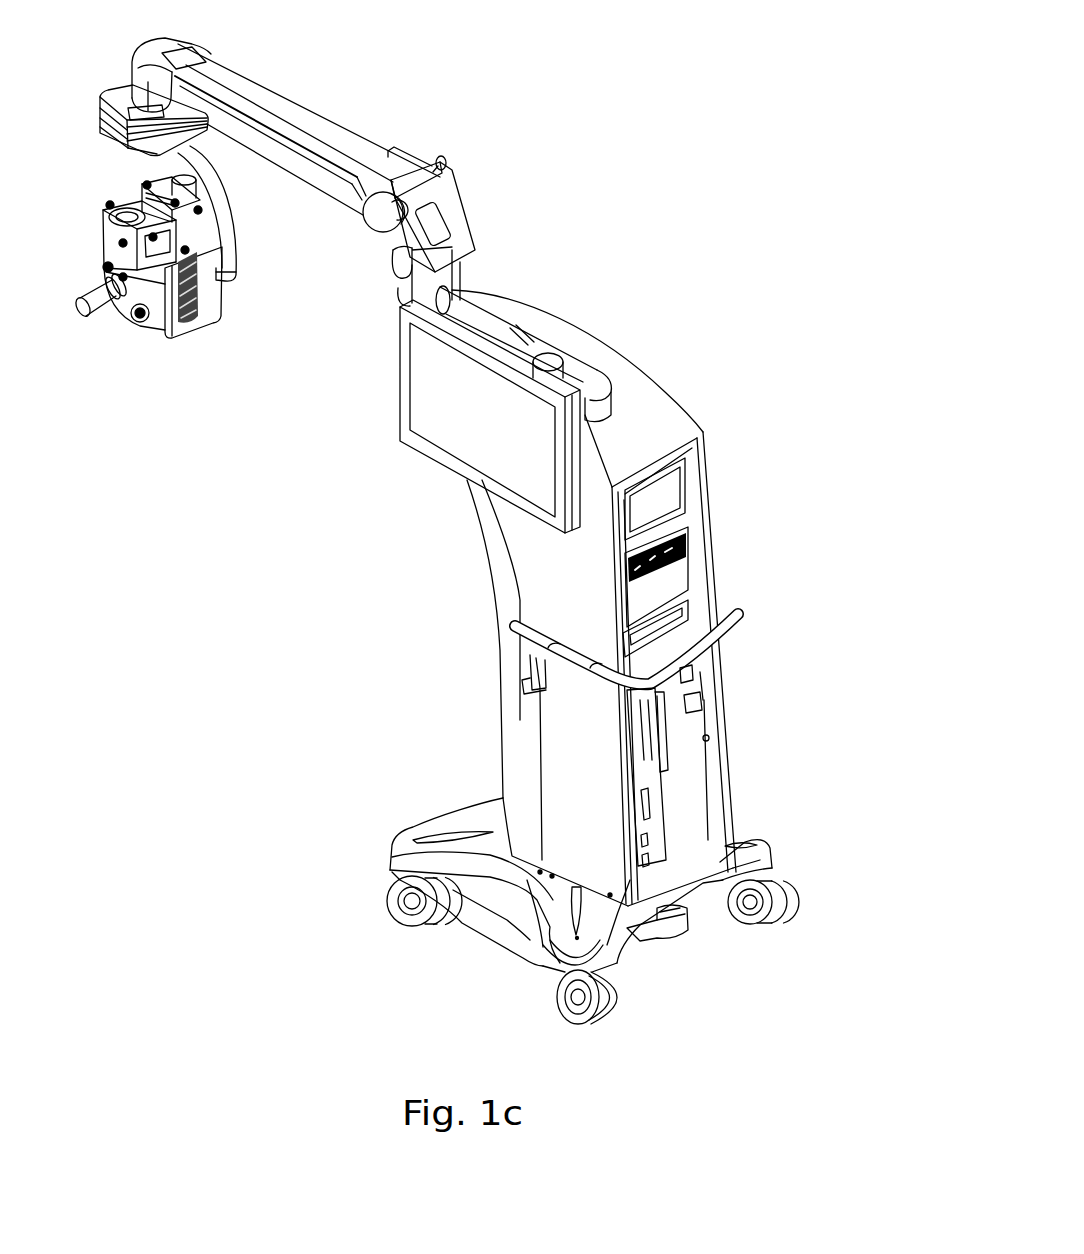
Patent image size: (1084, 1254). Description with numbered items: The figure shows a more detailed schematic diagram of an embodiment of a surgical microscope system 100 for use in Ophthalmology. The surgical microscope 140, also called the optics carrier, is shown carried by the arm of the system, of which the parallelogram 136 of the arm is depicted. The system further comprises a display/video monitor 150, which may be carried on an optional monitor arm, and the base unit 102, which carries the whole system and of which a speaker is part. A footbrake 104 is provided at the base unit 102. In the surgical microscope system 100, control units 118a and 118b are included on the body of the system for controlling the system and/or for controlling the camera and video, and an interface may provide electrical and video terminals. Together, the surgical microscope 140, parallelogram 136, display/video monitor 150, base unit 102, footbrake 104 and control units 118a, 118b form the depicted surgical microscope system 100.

The surgical microscope system 100 is at (852, 1018).
The base unit 102 is at (413, 840).
The footbrake 104 is at (658, 938).
The control unit 118a is at (677, 492).
The control unit 118b is at (682, 575).
The parallelogram of the arm 136 is at (293, 172).
The surgical microscope 140 is at (188, 322).
The display/video monitor 150 is at (425, 388).